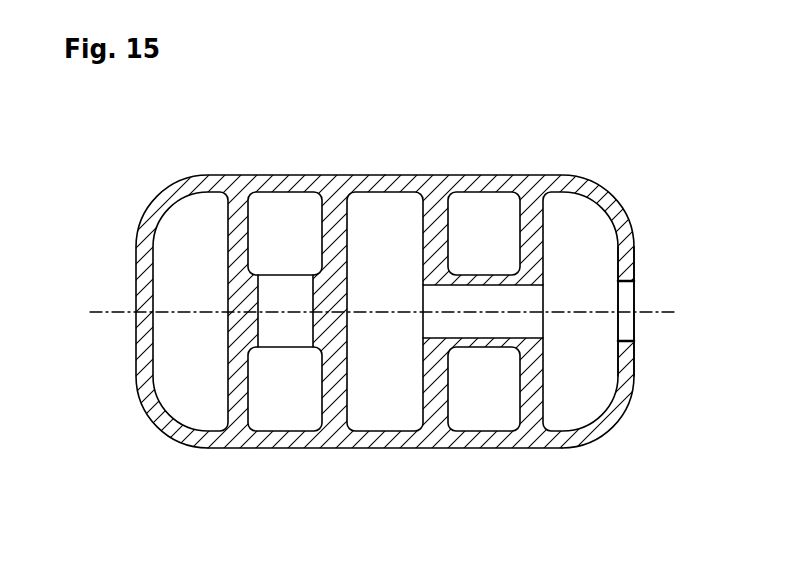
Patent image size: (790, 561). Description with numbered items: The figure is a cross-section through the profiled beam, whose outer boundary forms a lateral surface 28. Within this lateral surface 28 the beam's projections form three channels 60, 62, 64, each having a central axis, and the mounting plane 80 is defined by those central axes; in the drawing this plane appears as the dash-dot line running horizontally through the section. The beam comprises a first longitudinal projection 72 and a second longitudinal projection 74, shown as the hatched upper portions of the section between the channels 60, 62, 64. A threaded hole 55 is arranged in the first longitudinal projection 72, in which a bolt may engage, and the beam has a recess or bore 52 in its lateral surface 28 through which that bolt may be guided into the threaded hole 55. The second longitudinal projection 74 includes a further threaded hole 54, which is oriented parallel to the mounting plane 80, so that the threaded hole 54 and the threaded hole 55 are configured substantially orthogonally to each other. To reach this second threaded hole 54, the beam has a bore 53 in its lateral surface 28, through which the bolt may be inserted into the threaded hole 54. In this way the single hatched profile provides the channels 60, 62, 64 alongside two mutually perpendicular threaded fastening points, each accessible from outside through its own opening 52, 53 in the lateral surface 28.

The lateral surface 28 is at (455, 450).
The first longitudinal projection 72 is at (231, 152).
The second longitudinal projection 74 is at (540, 152).
The channel 60 is at (186, 226).
The channel 64 is at (587, 226).
The channel 62 is at (383, 415).
The recess or bore 52 is at (278, 440).
The threaded hole 55 is at (313, 303).
The threaded hole 54 is at (513, 283).
The bore 53 is at (625, 332).
The mounting plane 80 is at (108, 318).